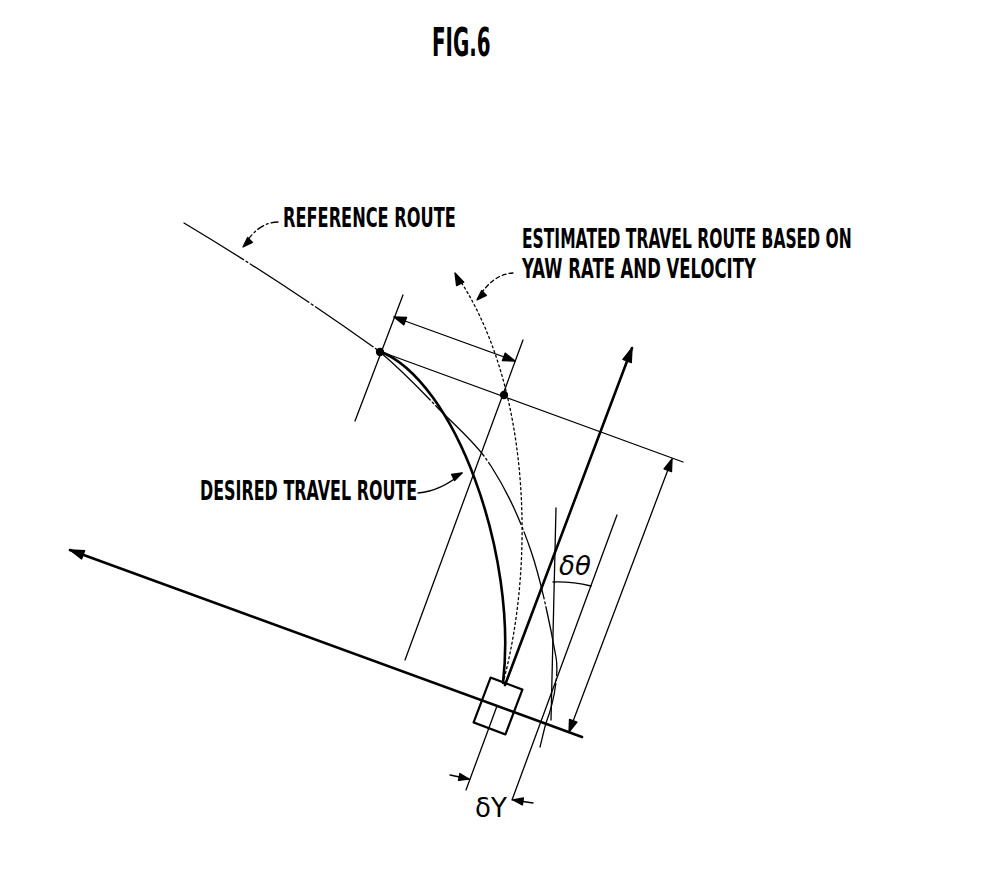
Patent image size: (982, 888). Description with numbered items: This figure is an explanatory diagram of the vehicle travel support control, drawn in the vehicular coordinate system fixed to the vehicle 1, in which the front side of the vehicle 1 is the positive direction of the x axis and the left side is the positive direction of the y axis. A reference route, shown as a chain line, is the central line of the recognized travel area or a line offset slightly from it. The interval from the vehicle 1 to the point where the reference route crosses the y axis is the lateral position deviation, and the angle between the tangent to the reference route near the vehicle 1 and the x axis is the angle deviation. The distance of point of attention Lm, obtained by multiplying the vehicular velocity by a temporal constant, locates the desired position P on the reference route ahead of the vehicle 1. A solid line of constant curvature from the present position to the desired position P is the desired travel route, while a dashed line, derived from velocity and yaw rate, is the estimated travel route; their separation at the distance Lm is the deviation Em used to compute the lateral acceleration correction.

The vehicle 1 is at (472, 725).
The desired position P is at (372, 355).
The deviation Em is at (454, 332).
The distance of point of attention Lm is at (620, 595).
The x axis x is at (573, 504).
The y axis y is at (317, 634).